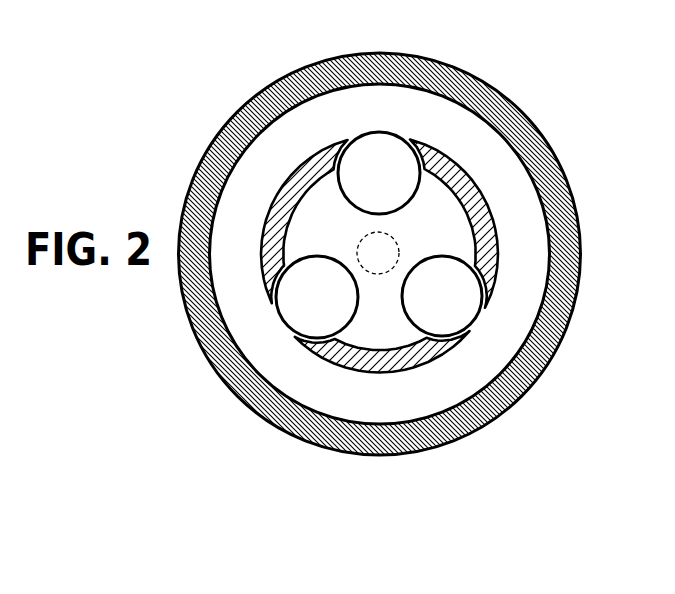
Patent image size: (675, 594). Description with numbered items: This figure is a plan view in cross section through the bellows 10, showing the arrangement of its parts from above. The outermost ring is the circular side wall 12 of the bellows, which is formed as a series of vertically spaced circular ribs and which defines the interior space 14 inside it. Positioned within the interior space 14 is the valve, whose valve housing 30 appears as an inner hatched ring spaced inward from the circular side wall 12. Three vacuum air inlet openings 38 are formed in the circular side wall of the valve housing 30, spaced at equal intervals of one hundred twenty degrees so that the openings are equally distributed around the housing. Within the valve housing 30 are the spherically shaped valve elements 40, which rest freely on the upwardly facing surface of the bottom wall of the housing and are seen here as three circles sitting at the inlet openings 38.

The bellows 10 is at (406, 245).
The circular side wall 12 is at (548, 147).
The interior space 14 is at (436, 252).
The valve housing 30 is at (436, 252).
The vacuum air inlet openings 38 is at (346, 139).
The valve elements 40 is at (386, 149).